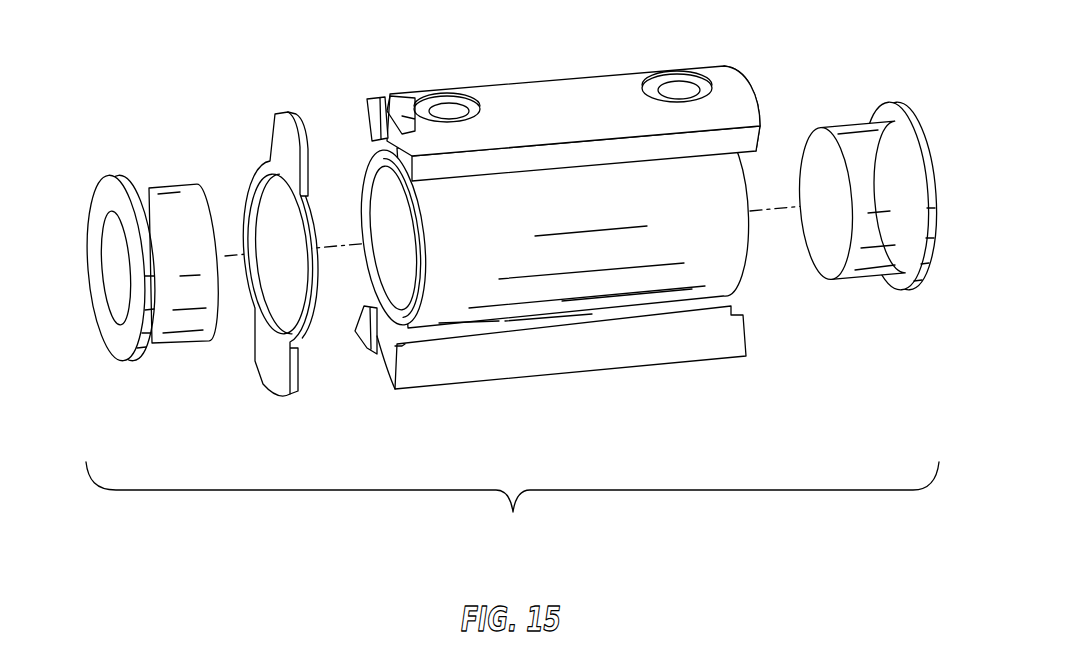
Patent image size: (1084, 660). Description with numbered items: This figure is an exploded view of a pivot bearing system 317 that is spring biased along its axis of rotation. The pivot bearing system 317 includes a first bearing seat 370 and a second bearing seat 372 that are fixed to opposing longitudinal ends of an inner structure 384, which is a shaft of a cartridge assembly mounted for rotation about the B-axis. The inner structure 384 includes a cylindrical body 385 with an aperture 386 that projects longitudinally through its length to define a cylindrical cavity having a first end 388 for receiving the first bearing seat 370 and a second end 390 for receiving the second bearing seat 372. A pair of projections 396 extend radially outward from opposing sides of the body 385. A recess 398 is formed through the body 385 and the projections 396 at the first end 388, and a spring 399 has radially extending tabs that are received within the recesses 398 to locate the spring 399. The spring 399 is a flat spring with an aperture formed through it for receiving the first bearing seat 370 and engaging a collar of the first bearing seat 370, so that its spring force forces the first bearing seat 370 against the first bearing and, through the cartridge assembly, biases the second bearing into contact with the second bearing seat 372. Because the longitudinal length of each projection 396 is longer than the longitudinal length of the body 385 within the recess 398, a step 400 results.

The pivot bearing system 317 is at (512, 508).
The first bearing seat 370 is at (161, 175).
The second bearing seat 372 is at (852, 128).
The inner structure 384 is at (588, 63).
The cylindrical body 385 is at (709, 282).
The aperture 386 is at (360, 255).
The first end 388 is at (357, 198).
The second end 390 is at (741, 255).
The projections 396 is at (722, 88).
The recess 398 is at (382, 101).
The spring 399 is at (254, 170).
The step 400 is at (396, 106).